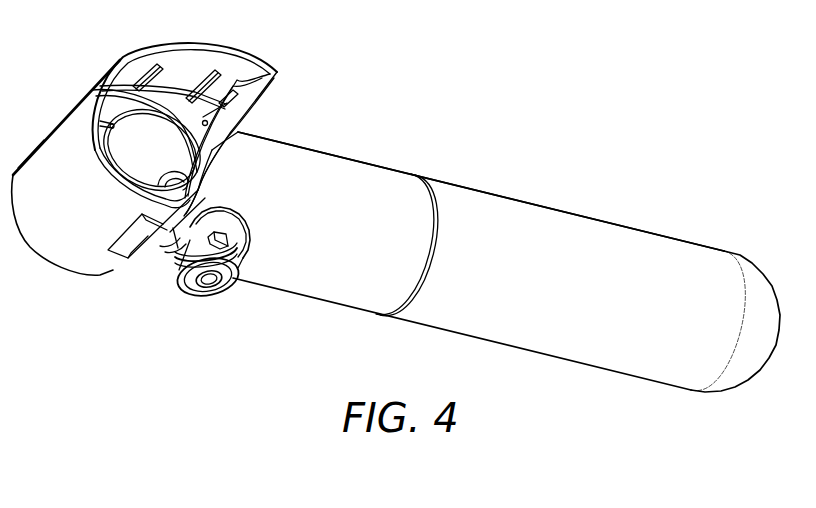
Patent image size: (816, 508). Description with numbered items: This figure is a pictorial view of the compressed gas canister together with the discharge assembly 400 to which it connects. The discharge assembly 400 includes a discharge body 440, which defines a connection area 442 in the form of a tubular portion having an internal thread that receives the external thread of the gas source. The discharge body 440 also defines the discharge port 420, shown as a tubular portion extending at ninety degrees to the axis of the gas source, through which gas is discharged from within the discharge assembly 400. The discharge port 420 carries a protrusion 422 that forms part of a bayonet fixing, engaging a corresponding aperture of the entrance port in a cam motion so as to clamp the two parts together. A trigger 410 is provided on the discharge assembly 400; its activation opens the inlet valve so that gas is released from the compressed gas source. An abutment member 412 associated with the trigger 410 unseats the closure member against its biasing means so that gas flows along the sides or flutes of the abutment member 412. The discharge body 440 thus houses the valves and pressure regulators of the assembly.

The discharge assembly 400 is at (640, 168).
The trigger 410 is at (190, 62).
The abutment member 412 is at (212, 196).
The discharge port 420 is at (187, 297).
The protrusion 422 is at (228, 229).
The discharge body 440 is at (325, 288).
The connection area 442 is at (343, 163).